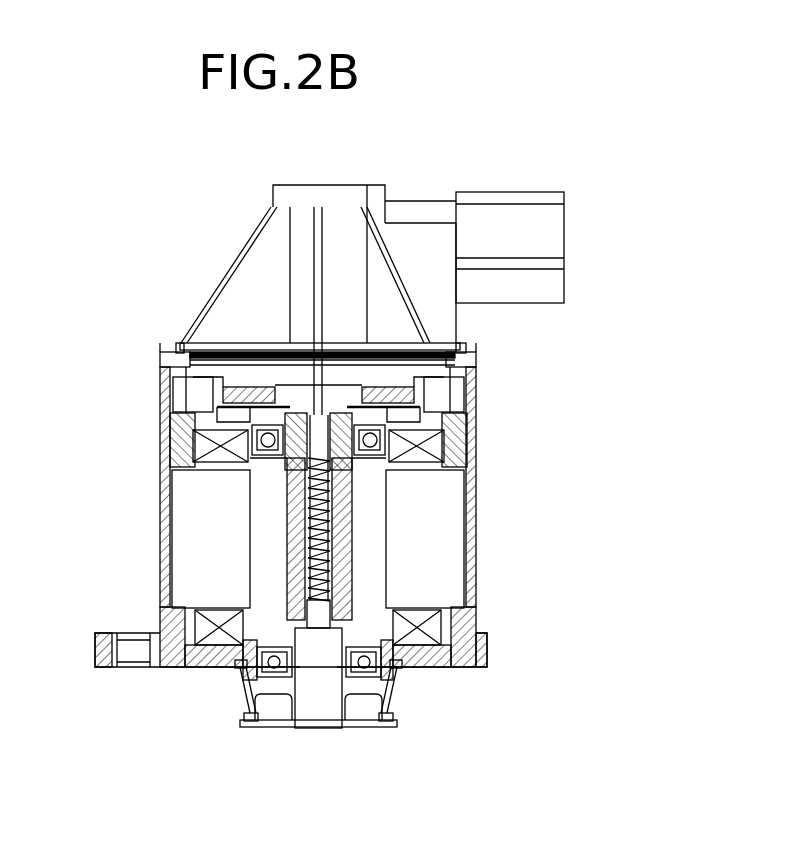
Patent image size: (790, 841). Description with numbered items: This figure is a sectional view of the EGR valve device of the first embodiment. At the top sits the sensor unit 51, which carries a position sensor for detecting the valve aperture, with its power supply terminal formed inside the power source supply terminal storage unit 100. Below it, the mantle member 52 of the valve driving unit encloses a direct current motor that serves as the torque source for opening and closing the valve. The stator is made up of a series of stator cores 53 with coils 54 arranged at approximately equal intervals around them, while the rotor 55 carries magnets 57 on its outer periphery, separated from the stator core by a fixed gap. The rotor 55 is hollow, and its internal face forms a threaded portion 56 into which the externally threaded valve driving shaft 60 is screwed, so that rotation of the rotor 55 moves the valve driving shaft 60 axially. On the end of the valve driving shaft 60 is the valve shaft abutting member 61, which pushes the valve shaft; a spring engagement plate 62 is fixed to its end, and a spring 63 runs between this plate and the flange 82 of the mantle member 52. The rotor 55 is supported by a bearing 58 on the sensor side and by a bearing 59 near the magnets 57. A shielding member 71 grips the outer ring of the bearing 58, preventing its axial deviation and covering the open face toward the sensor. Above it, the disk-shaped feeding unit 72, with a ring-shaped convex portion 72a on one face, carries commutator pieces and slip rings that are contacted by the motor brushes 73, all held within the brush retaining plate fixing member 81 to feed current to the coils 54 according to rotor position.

The power source supply terminal storage unit 100 is at (525, 197).
The sensor unit 51 is at (253, 233).
The motor brushes 73 is at (177, 347).
The ring-shaped convex portion 72a is at (262, 387).
The disk-shaped feeding unit 72 is at (183, 393).
The brush retaining plate fixing member 81 is at (163, 386).
The shielding member 71 is at (432, 425).
The bearing 58 is at (258, 438).
The coils 54 is at (207, 455).
The magnets 57 is at (263, 500).
The rotor 55 is at (352, 500).
The stator cores 53 is at (203, 543).
The mantle member 52 is at (160, 592).
The flange 82 is at (145, 668).
The threaded portion 56 is at (350, 462).
The valve driving shaft 60 is at (335, 562).
The valve shaft abutting member 61 is at (310, 712).
The bearing 59 is at (238, 682).
The spring 63 is at (395, 712).
The spring engagement plate 62 is at (390, 727).